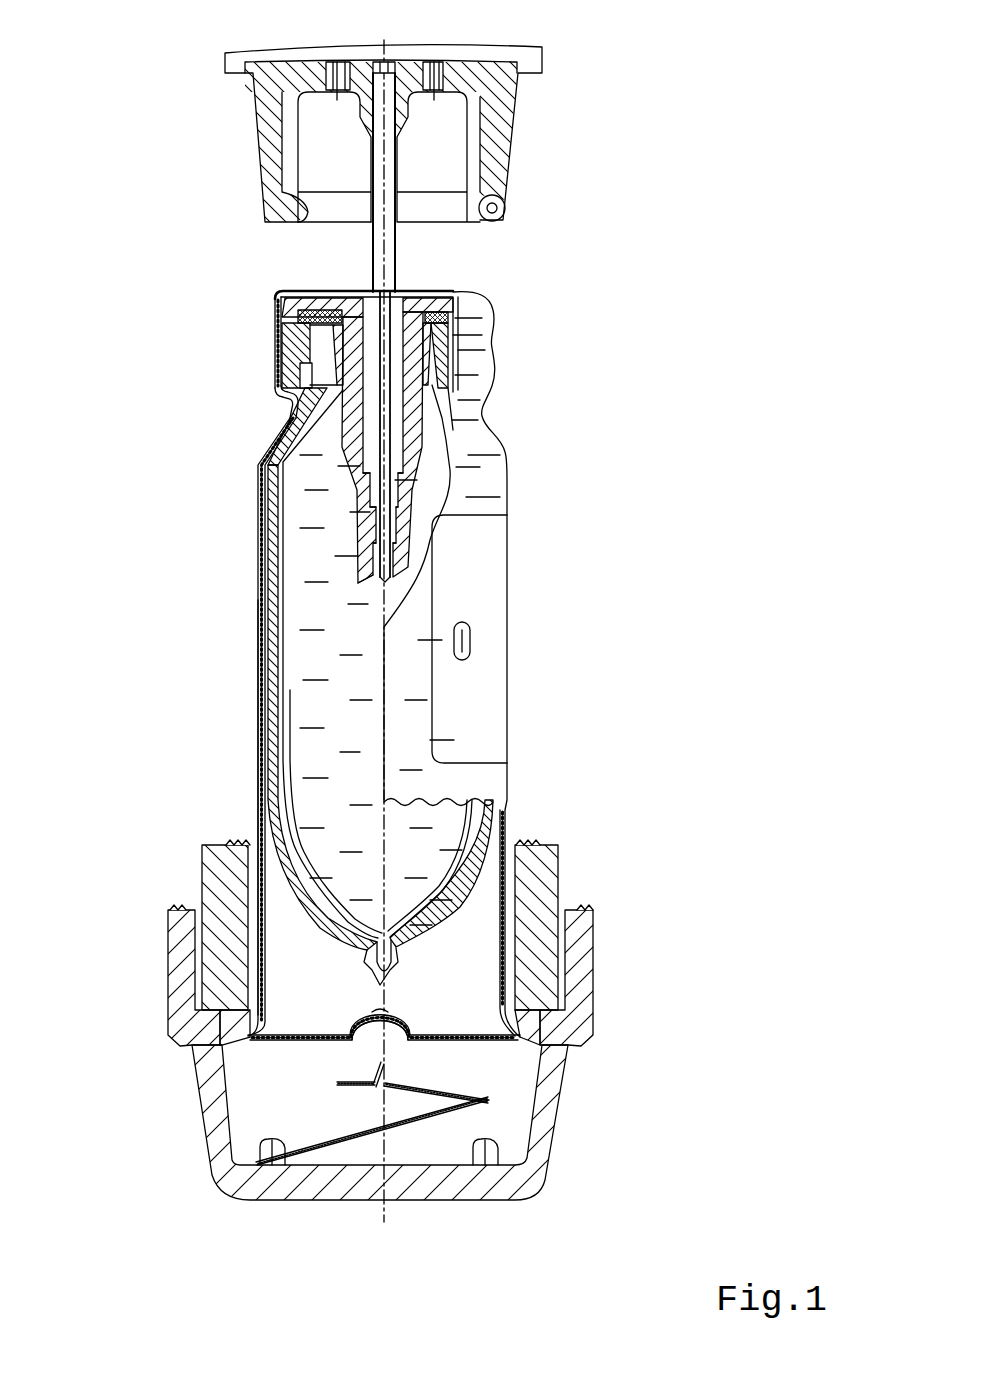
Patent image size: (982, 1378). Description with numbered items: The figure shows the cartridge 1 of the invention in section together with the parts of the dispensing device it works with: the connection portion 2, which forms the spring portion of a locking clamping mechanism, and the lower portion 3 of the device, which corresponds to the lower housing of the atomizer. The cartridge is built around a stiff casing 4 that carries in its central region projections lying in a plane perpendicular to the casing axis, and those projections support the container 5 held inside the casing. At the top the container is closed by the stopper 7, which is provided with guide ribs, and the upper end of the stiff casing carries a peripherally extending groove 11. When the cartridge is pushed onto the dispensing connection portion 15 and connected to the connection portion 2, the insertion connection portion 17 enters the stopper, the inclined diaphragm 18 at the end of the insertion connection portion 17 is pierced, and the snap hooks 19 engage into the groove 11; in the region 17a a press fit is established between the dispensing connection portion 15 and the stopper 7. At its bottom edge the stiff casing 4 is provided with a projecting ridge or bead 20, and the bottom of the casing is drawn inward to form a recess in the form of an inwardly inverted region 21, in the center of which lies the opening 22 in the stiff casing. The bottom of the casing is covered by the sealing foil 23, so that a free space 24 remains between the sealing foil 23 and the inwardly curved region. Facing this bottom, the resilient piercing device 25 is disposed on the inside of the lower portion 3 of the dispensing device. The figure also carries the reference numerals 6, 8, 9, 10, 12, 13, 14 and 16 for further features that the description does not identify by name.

The cartridge 1 is at (520, 667).
The connection portion 2 is at (517, 63).
The lower portion 3 is at (178, 947).
The stiff casing 4 is at (260, 823).
The container 5 is at (272, 770).
The inner wall surface 6 is at (288, 718).
The stopper 7 is at (412, 358).
The bottle neck flange 8 is at (290, 367).
The left seal ring 9 is at (308, 316).
The right seal ring 10 is at (445, 302).
The peripherally extending groove 11 is at (278, 407).
The bottle neck exterior 12 is at (495, 328).
The crimp cap 13 is at (300, 288).
The protective sheath 14 is at (275, 455).
The dispensing connection portion 15 is at (378, 235).
The stopper flange 16 is at (403, 300).
The insertion connection portion 17 is at (407, 473).
The region 17a is at (352, 552).
The inclined diaphragm 18 is at (392, 578).
The snap hooks 19 is at (492, 208).
The projecting ridge or bead 20 is at (243, 1037).
The inwardly inverted region 21 is at (400, 1020).
The opening 22 is at (381, 1002).
The sealing foil 23 is at (288, 1047).
The free space 24 is at (390, 1033).
The resilient piercing device 25 is at (478, 1107).